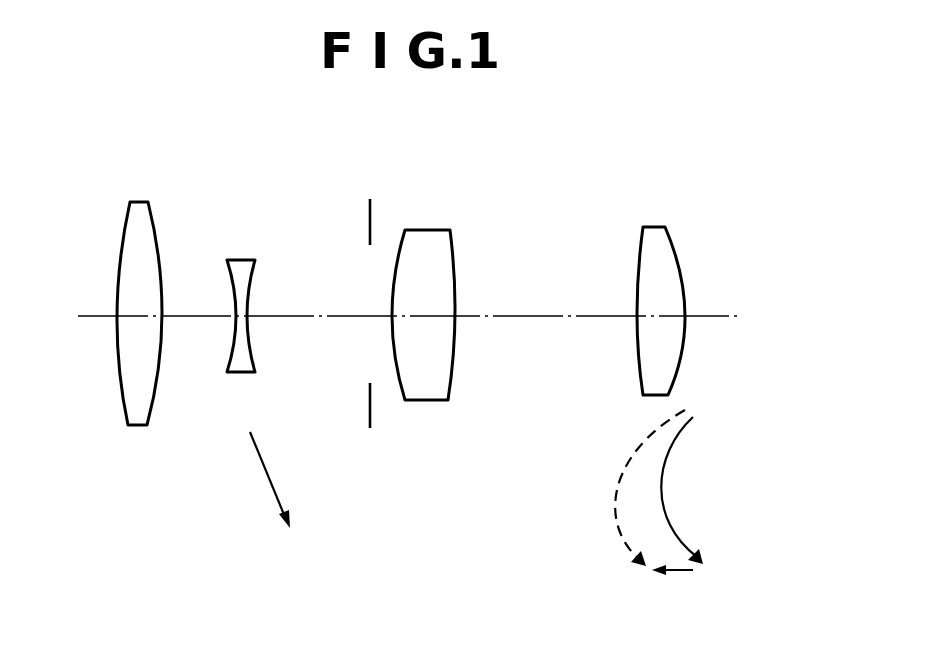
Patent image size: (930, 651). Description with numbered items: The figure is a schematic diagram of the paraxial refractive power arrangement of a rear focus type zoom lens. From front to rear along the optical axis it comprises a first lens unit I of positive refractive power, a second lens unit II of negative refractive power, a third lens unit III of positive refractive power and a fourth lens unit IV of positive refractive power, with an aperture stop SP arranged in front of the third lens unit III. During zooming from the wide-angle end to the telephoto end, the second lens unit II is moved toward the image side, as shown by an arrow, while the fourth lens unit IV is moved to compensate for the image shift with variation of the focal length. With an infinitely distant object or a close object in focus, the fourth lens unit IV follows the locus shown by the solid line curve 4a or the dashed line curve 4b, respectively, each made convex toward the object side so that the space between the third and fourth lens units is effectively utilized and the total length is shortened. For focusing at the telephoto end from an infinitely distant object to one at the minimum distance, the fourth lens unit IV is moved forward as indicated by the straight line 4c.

The first lens unit I is at (141, 202).
The second lens unit II is at (241, 260).
The third lens unit III is at (430, 230).
The fourth lens unit IV is at (655, 227).
The aperture stop SP is at (369, 222).
The solid line curve 4a is at (662, 506).
The dashed line curve 4b is at (613, 507).
The straight line 4c is at (683, 574).